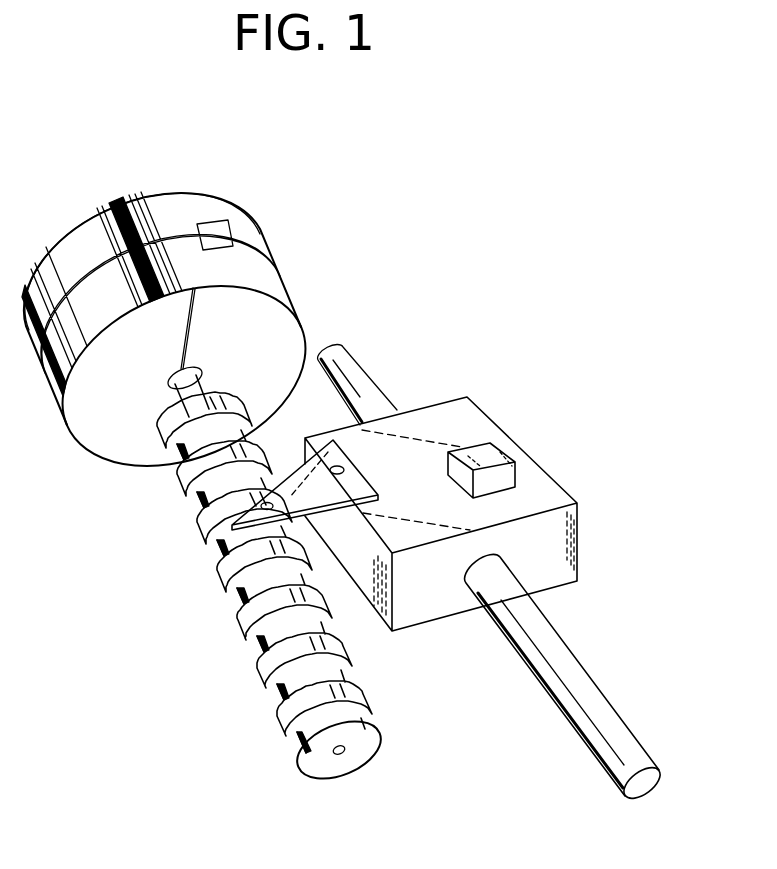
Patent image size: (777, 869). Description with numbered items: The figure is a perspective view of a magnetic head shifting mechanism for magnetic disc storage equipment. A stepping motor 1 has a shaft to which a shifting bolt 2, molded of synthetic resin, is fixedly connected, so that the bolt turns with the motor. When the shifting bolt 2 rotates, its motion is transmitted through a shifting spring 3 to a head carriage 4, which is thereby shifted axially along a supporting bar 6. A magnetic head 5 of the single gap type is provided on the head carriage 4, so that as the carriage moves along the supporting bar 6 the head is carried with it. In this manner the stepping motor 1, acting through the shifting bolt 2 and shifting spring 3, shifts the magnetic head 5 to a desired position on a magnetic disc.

The stepping motor 1 is at (268, 278).
The shifting bolt 2 is at (232, 613).
The shifting spring 3 is at (352, 483).
The head carriage 4 is at (450, 418).
The magnetic head 5 is at (498, 465).
The supporting bar 6 is at (565, 660).